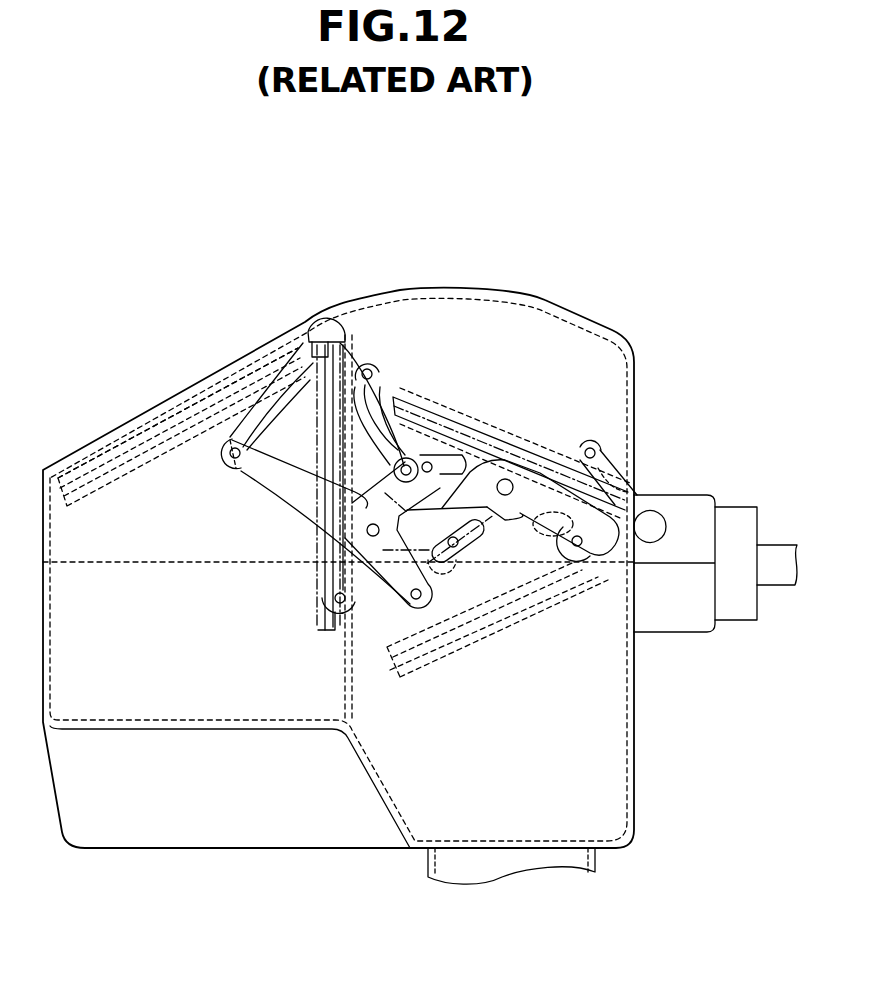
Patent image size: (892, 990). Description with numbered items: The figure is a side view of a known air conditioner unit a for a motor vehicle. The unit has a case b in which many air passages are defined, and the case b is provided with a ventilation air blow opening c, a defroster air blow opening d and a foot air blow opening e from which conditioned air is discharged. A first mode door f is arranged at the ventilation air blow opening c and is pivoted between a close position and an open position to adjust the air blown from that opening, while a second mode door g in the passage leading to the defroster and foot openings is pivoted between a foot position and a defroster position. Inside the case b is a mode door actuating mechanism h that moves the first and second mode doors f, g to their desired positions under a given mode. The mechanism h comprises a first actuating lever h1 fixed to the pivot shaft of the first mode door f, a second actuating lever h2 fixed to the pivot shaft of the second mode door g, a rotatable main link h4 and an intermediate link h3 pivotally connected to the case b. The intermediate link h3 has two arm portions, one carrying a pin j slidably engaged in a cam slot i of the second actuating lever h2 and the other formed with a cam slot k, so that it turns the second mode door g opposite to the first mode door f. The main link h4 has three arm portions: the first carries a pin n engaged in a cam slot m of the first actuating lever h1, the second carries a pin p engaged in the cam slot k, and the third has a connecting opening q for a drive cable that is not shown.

The air conditioner unit a is at (355, 268).
The case b is at (540, 302).
The ventilation air blow opening c is at (140, 418).
The defroster air blow opening d is at (398, 300).
The foot air blow opening e is at (502, 865).
The first mode door f is at (137, 455).
The second mode door g is at (396, 657).
The mode door actuating mechanism h is at (336, 487).
The first actuating lever h1 is at (257, 408).
The second actuating lever h2 is at (664, 513).
The intermediate link h3 is at (445, 452).
The main link h4 is at (284, 500).
The cam slot i is at (621, 545).
The pin j is at (576, 548).
The cam slot k is at (483, 465).
The cam slot m is at (216, 416).
The pin n is at (222, 452).
The pin p is at (427, 460).
The connecting opening q is at (422, 590).